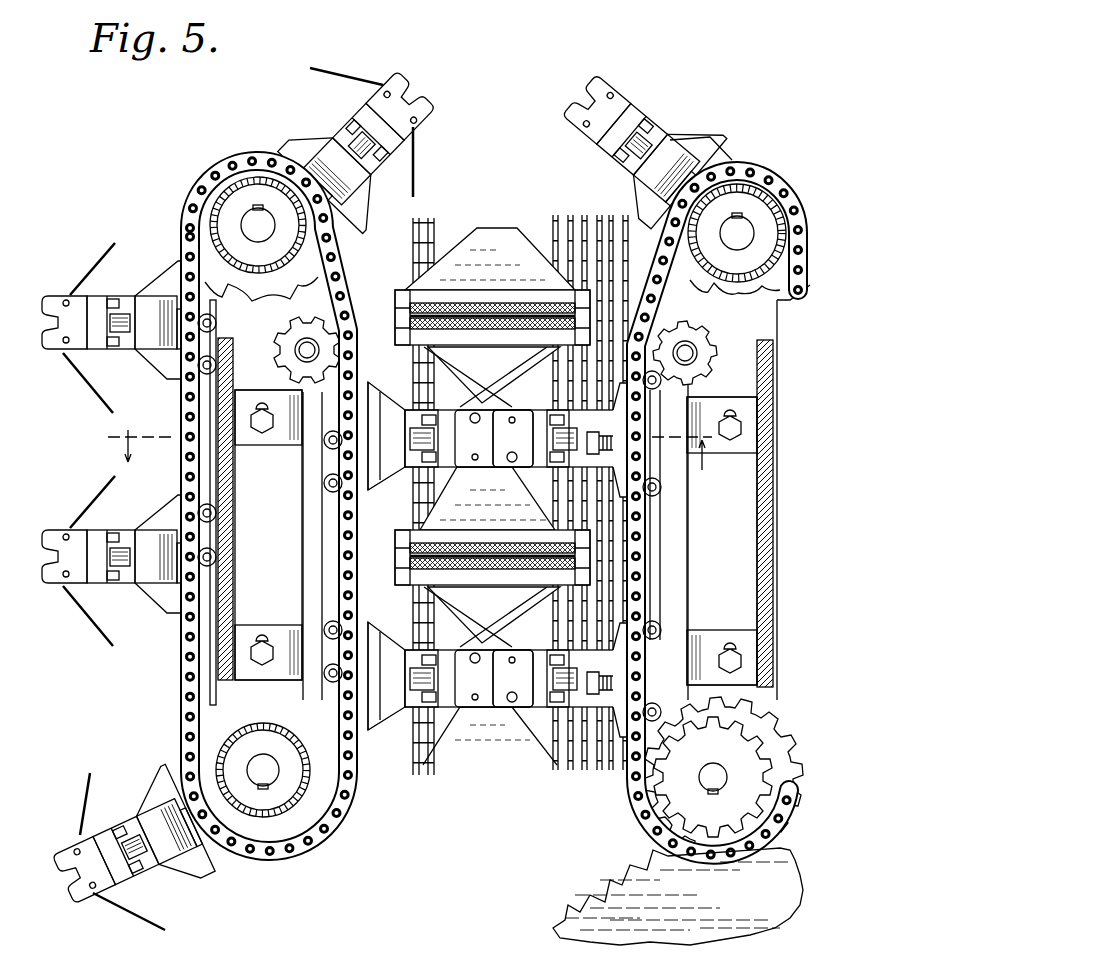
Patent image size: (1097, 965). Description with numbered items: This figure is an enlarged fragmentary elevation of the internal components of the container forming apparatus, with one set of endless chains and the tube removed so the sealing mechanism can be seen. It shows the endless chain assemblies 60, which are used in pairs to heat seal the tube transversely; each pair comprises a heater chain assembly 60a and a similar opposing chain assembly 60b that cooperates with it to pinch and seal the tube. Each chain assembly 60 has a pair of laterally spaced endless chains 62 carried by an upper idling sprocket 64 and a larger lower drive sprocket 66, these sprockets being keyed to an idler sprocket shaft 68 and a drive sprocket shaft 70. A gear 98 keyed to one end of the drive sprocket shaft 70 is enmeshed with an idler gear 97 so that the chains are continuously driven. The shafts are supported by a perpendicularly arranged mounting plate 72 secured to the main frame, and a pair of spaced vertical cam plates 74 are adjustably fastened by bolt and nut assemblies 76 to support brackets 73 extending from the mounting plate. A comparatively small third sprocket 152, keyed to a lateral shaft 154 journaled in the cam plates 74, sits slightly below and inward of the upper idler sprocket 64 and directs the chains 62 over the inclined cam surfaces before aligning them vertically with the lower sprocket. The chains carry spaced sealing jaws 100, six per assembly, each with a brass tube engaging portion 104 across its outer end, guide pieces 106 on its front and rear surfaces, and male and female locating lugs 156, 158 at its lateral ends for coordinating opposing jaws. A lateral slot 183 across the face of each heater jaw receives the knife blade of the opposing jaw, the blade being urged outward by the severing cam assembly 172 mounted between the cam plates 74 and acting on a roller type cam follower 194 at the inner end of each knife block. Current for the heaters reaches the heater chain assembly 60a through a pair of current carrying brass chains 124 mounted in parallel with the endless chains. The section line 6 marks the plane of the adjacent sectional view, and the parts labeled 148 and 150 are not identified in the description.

The endless chain assembly 60 is at (414, 435).
The heater chain assembly 60a is at (749, 134).
The opposing chain assembly 60b is at (297, 77).
The sealing jaw 100 is at (564, 84).
The upper idling sprocket 64 is at (245, 152).
The idler sprocket shaft 68 is at (248, 226).
The lower drive sprocket 66 is at (308, 808).
The drive sprocket shaft 70 is at (268, 780).
The gear 98 is at (713, 777).
The endless chain 62 is at (352, 554).
The third sprocket 152 is at (332, 346).
The lateral shaft 154 is at (410, 297).
The roller type cam follower 194 is at (214, 554).
The bolt block 150 is at (320, 442).
The wear bar 148 is at (216, 533).
The mounting plate 72 is at (228, 562).
The vertical cam plate 74 is at (283, 612).
The support bracket 73 is at (240, 634).
The bolt and nut assembly 76 is at (254, 660).
The guide piece 106 is at (476, 325).
The tube engaging portion 104 is at (480, 560).
The lateral slot 183 is at (468, 325).
The male locating lug 156 is at (694, 586).
The female locating lug 158 is at (68, 912).
The severing cam assembly 172 is at (378, 556).
The current carrying brass chain 124 is at (605, 792).
The idler gear 97 is at (604, 878).
The section line 6- 6 is at (410, 463).